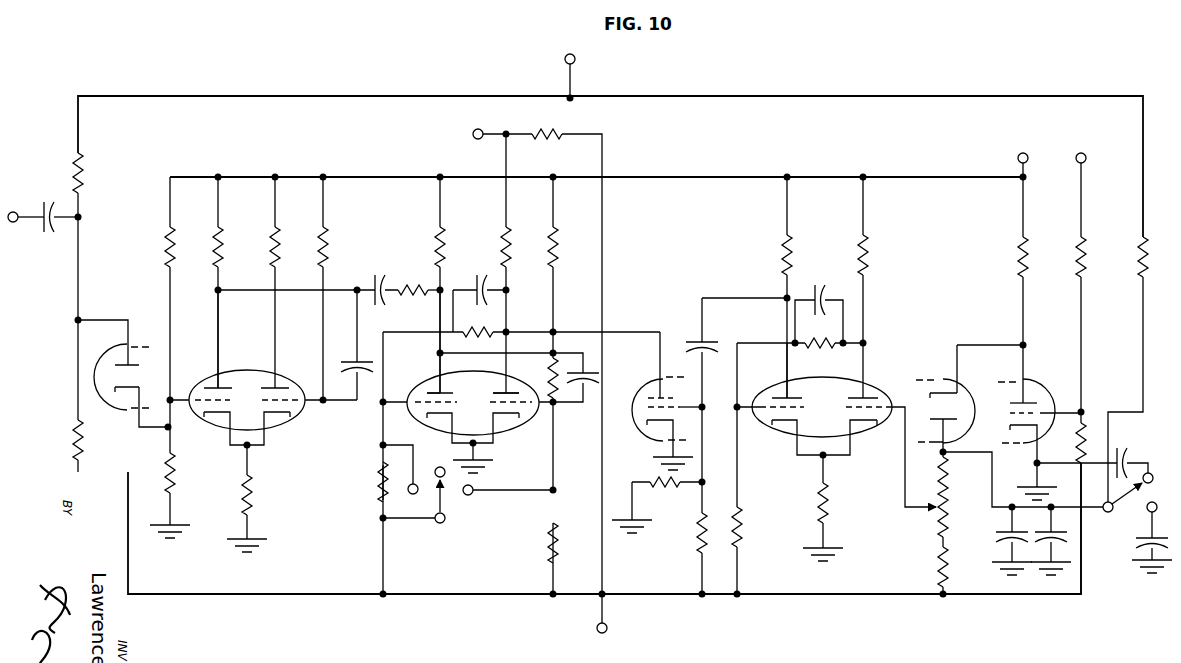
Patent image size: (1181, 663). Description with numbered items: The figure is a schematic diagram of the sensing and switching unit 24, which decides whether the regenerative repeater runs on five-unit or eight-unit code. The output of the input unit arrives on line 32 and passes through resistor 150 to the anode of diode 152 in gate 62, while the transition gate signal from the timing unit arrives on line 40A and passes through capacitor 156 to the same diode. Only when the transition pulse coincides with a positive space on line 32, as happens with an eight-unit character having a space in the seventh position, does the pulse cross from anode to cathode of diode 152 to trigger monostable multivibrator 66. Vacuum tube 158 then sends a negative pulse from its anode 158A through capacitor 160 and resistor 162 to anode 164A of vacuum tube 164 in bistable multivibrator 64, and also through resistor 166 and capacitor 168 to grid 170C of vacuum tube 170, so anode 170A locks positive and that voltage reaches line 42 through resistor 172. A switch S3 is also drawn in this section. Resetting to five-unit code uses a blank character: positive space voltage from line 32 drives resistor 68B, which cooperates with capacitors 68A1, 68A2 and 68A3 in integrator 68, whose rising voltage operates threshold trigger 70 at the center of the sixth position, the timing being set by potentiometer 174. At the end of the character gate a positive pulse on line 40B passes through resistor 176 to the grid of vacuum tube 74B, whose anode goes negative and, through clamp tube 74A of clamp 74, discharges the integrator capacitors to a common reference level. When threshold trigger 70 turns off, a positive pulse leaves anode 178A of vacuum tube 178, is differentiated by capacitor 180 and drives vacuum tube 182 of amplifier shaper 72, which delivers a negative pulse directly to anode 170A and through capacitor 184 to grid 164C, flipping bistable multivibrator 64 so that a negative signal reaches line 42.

The sensing and switching unit 24 is at (233, 57).
The line 32 is at (576, 60).
The line 40A is at (13, 212).
The line 40B is at (1086, 162).
The line 42 is at (472, 133).
The gate 62 is at (126, 318).
The bistable multivibrator 64 is at (504, 548).
The monostable multivibrator 66 is at (312, 487).
The integrator 68 is at (1127, 406).
The capacitor 68A1 is at (1130, 453).
The capacitor 68A2 is at (1009, 540).
The capacitor 68A3 is at (1066, 537).
The resistor 68B is at (1135, 269).
The threshold trigger 70 is at (784, 516).
The amplifier shaper 72 is at (692, 327).
The clamp 74 is at (986, 336).
The clamp tube 74A is at (908, 388).
The vacuum tube 74B is at (1051, 382).
The resistor 150 is at (84, 180).
The diode 152 is at (95, 415).
The capacitor 156 is at (46, 230).
The vacuum tube 158 is at (285, 347).
The anode 158A is at (222, 293).
The capacitor 160 is at (372, 272).
The resistor 162 is at (409, 276).
The vacuum tube 164 is at (406, 413).
The anode 164A is at (438, 353).
The grid 164C is at (429, 386).
The resistor 166 is at (583, 404).
The capacitor 168 is at (592, 372).
The vacuum tube 170 is at (531, 434).
The anode 170A is at (500, 388).
The grid 170C is at (533, 389).
The resistor 172 is at (512, 237).
The potentiometer 174 is at (936, 524).
The resistor 176 is at (1086, 258).
The vacuum tube 178 is at (758, 432).
The anode 178A is at (779, 392).
The capacitor 180 is at (714, 339).
The vacuum tube 182 is at (634, 386).
The capacitor 184 is at (486, 271).
The switch S3 is at (490, 485).